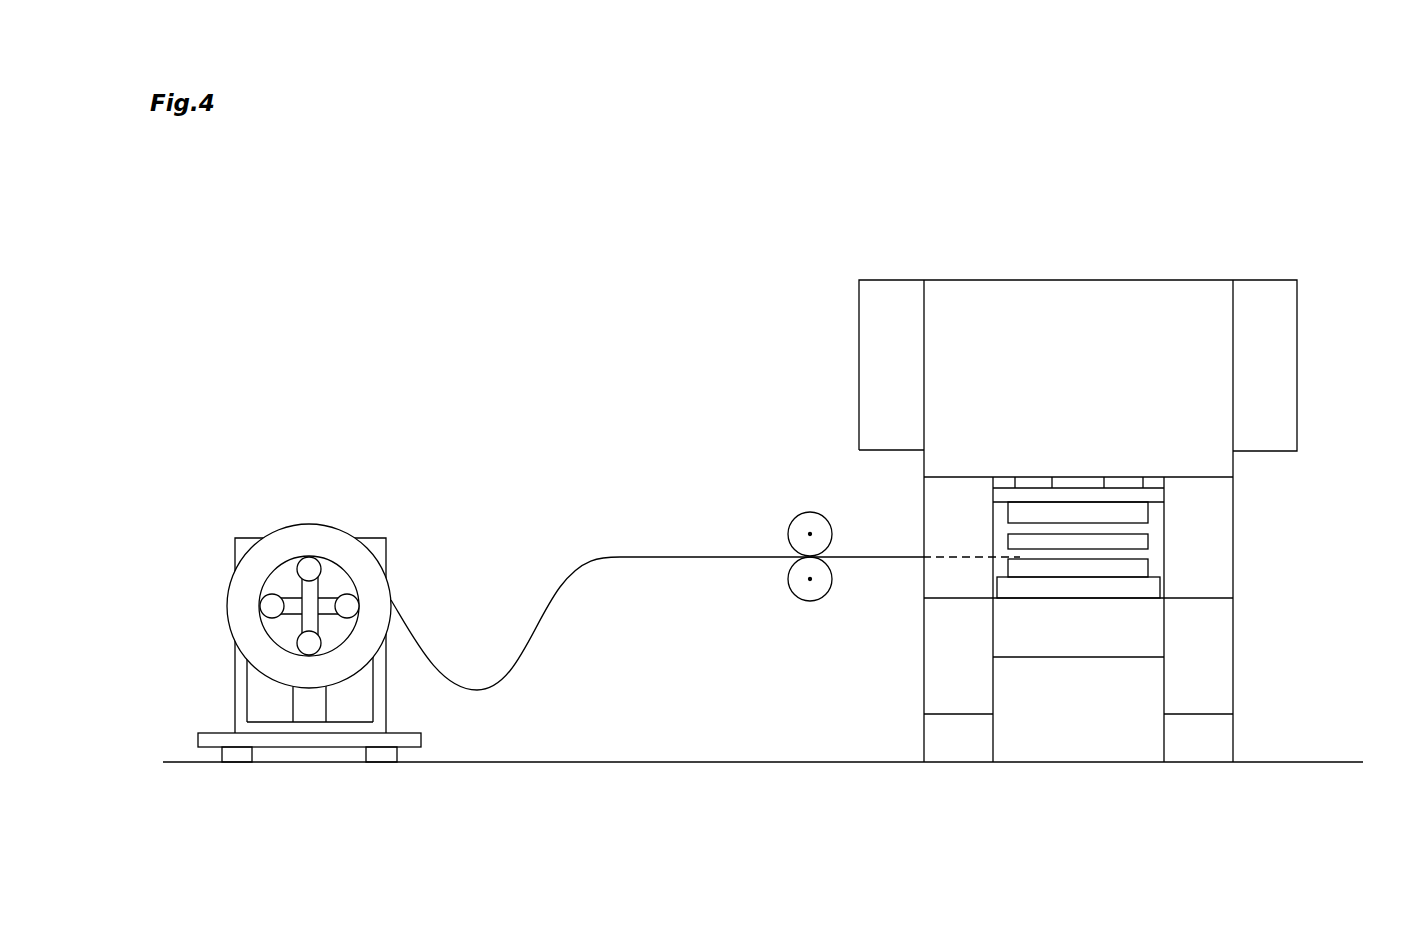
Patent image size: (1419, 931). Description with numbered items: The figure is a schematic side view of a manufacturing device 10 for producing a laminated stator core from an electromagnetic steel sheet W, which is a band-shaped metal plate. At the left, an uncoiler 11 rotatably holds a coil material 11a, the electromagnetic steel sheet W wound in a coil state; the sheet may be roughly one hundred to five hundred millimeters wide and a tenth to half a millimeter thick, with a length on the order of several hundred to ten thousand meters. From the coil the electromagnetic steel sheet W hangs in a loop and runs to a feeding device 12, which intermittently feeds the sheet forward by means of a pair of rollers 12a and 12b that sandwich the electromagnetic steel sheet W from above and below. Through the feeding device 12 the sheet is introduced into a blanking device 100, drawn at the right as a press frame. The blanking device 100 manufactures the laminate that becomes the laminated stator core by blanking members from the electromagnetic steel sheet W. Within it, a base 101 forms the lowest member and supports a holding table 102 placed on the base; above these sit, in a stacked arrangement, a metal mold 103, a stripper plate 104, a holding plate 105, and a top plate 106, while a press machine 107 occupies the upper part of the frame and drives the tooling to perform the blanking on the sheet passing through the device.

The manufacturing device 10 is at (326, 212).
The uncoiler 11 is at (309, 609).
The coil material 11a is at (312, 523).
The electromagnetic steel sheet W is at (418, 646).
The feeding device 12 is at (825, 530).
The roller 12a is at (824, 512).
The roller 12b is at (829, 596).
The blanking device 100 is at (1113, 485).
The base 101 is at (1140, 627).
The holding table 102 is at (1145, 588).
The metal mold 103 is at (1147, 567).
The stripper plate 104 is at (1147, 541).
The holding plate 105 is at (1145, 517).
The top plate 106 is at (1157, 494).
The press machine 107 is at (1076, 281).